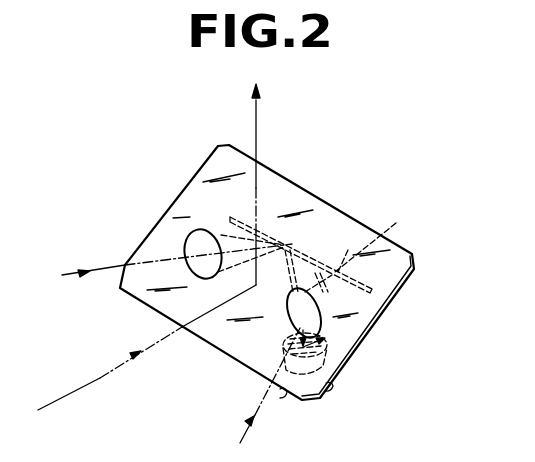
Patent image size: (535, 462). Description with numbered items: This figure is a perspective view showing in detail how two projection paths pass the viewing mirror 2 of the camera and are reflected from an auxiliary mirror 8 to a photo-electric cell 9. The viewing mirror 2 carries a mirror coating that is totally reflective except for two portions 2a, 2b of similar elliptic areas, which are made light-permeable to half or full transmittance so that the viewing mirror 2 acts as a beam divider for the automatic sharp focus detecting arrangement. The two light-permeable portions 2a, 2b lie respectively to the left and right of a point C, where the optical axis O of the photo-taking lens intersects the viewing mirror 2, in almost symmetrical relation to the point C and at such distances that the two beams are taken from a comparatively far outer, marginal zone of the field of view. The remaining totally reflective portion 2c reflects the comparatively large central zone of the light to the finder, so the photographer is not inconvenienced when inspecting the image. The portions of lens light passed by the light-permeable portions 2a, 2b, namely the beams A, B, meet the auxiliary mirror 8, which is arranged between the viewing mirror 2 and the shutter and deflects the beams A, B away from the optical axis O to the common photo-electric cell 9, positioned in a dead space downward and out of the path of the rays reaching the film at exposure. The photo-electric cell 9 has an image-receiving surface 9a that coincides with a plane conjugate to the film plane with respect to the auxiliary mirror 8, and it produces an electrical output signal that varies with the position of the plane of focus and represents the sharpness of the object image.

The viewing mirror 2 is at (283, 188).
The light-permeable portion 2a is at (192, 243).
The light-permeable portion 2b is at (292, 326).
The totally reflective portion 2c is at (331, 231).
The auxiliary mirror 8 is at (321, 250).
The photo-electric cell 9 is at (325, 365).
The image-receiving surface 9a is at (335, 333).
The light beam A is at (224, 257).
The light beam B is at (325, 290).
The point C is at (257, 285).
The optical axis O is at (97, 378).